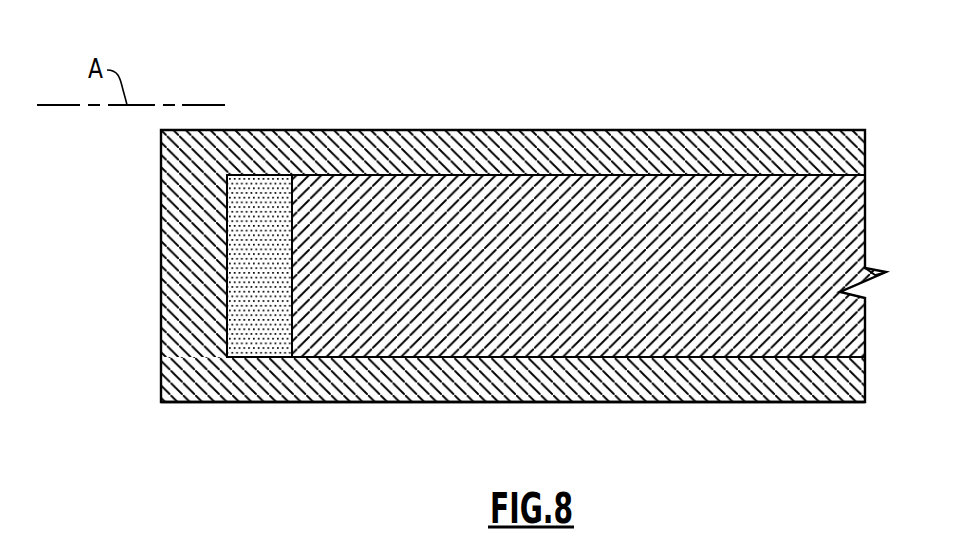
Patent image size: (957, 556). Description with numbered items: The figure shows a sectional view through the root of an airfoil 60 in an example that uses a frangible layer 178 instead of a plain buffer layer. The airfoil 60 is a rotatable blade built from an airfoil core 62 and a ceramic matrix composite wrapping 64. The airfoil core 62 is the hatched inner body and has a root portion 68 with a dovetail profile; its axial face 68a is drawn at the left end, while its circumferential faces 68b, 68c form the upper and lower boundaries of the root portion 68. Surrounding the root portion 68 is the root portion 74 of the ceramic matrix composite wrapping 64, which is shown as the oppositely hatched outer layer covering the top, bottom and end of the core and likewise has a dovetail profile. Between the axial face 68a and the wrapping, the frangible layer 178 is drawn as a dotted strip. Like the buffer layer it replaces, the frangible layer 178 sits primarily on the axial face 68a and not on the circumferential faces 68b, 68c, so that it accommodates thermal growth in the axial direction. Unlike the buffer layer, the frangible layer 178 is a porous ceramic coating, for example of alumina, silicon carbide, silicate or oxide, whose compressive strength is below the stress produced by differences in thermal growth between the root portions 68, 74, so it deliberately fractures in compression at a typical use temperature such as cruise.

The airfoil 60 is at (259, 72).
The airfoil core 62 is at (652, 160).
The ceramic matrix composite wrapping 64 is at (398, 420).
The root portion 68 is at (567, 205).
The axial face 68a is at (288, 320).
The circumferential face 68b is at (451, 170).
The circumferential face 68c is at (727, 357).
The root portion 74 is at (349, 378).
The frangible layer 178 is at (248, 340).